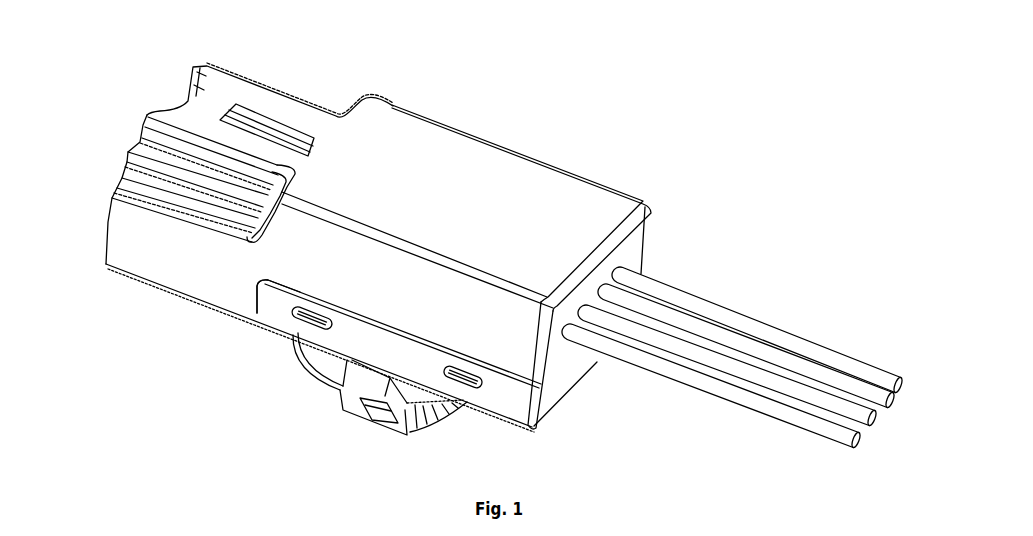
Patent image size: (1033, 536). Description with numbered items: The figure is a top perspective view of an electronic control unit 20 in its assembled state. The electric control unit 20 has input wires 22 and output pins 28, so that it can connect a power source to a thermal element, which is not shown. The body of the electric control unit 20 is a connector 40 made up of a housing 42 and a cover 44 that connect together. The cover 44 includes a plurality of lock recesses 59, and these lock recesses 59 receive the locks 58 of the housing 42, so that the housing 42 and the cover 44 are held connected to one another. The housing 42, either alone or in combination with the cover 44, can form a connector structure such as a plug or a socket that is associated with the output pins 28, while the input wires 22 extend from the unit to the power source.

The electronic control unit 20 is at (413, 224).
The input wires 22 is at (778, 318).
The output pins 28 is at (167, 104).
The connector 40 is at (342, 224).
The housing 42 is at (408, 152).
The cover 44 is at (367, 338).
The locks 58 is at (300, 322).
The lock recesses 59 is at (267, 313).